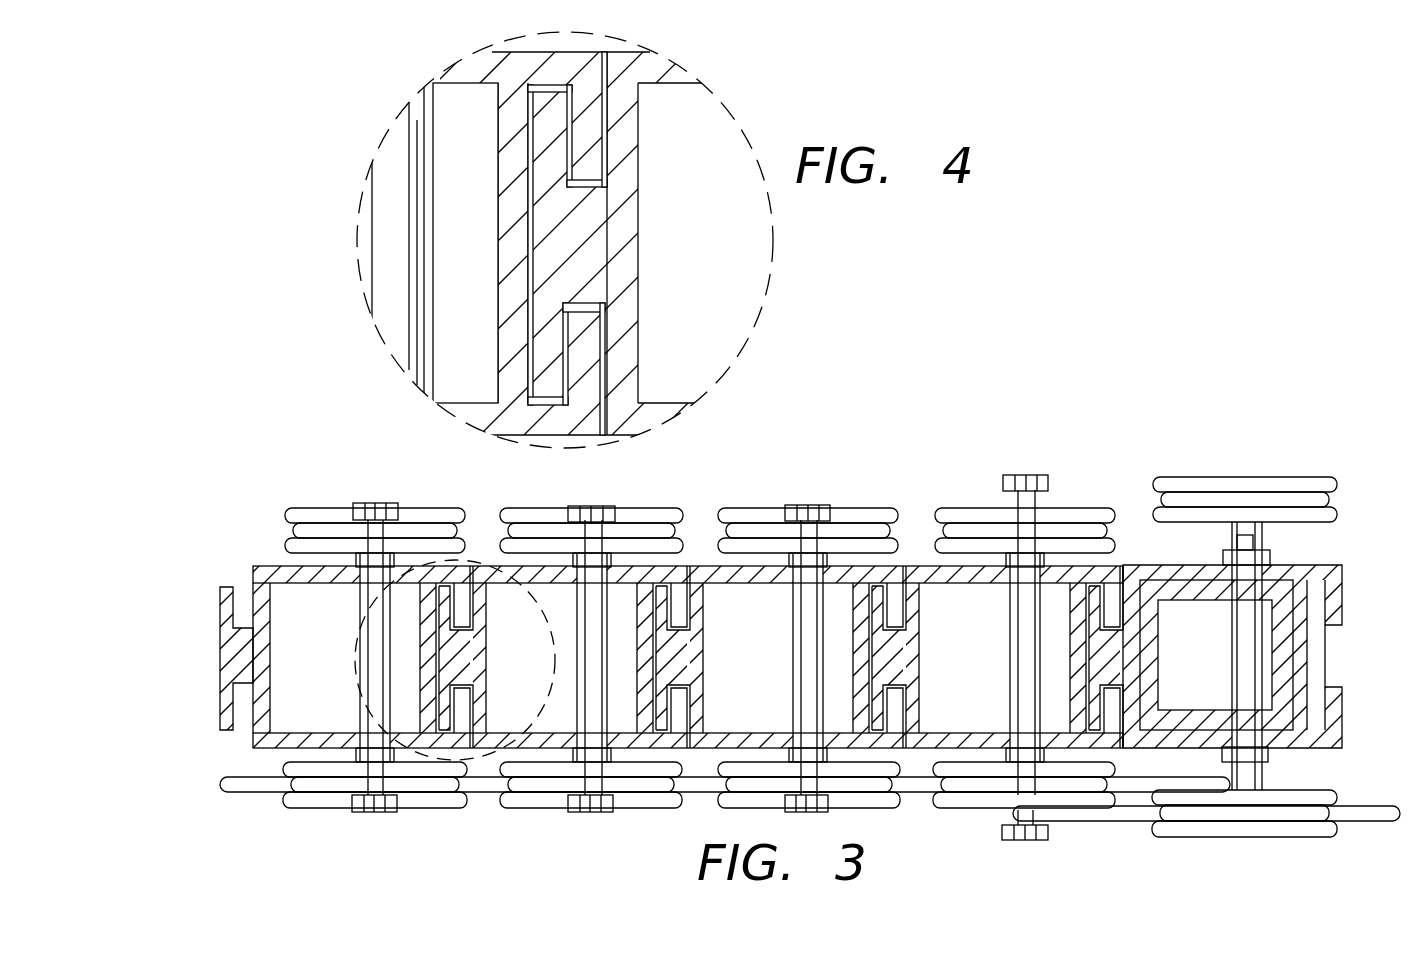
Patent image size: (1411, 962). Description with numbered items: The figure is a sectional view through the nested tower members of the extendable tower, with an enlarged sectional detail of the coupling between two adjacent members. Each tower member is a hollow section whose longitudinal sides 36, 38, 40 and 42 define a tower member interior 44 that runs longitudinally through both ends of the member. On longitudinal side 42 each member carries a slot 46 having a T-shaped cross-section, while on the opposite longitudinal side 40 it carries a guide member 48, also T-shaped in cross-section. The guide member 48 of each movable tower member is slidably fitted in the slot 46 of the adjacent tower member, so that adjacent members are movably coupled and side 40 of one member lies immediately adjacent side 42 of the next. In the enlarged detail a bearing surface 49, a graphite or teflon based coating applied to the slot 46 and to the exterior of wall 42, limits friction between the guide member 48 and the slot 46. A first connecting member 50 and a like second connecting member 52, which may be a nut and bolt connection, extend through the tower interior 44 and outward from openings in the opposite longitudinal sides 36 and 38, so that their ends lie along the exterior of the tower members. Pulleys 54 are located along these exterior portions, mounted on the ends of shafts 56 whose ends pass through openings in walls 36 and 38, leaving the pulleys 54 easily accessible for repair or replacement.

In FIG. 3, the longitudinal side 36 is at (272, 566).
In FIG. 3, the longitudinal side 38 is at (262, 760).
In FIG. 3, the longitudinal side 40 is at (253, 588).
In FIG. 4, the longitudinal side 40 is at (604, 355).
In FIG. 3, the longitudinal side 42 is at (1342, 593).
In FIG. 4, the longitudinal side 42 is at (604, 114).
In FIG. 3, the tower member interior 44 is at (331, 649).
In FIG. 3, the slot 46 is at (1320, 613).
In FIG. 4, the slot 46 is at (538, 265).
In FIG. 3, the guide member 48 is at (233, 665).
In FIG. 4, the guide member 48 is at (550, 147).
In FIG. 4, the bearing surface 49 is at (600, 186).
In FIG. 3, the first connecting member 50 is at (590, 812).
In FIG. 3, the second connecting member 52 is at (1025, 475).
In FIG. 3, the pulley 54 is at (757, 508).
In FIG. 3, the shaft 56 is at (793, 633).